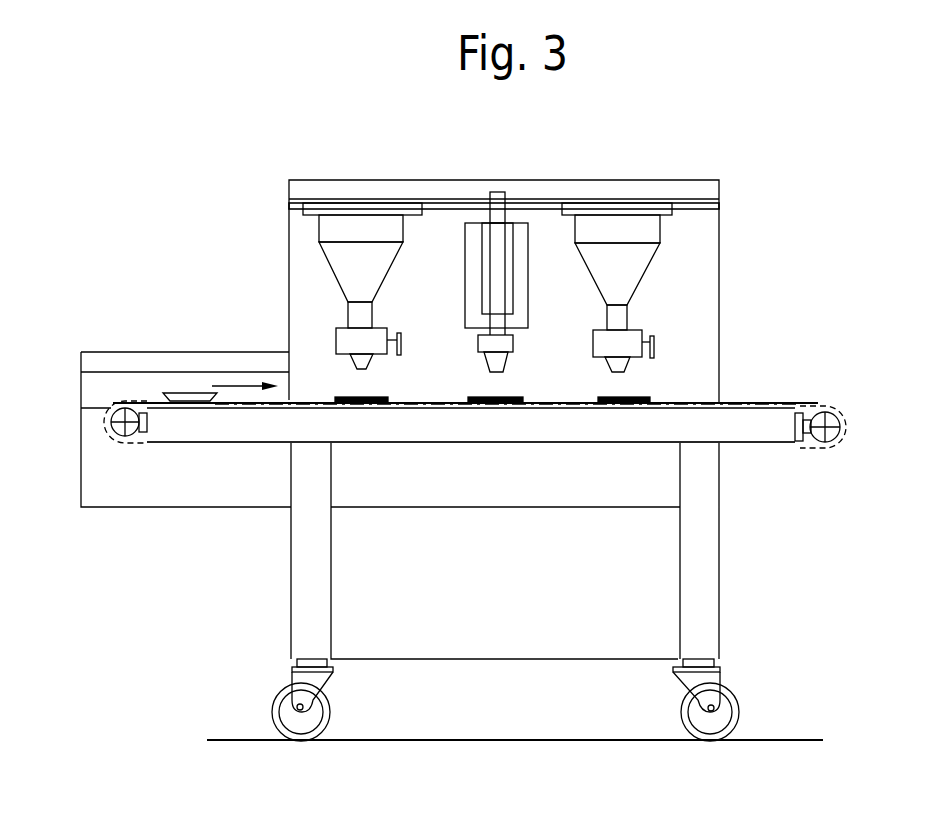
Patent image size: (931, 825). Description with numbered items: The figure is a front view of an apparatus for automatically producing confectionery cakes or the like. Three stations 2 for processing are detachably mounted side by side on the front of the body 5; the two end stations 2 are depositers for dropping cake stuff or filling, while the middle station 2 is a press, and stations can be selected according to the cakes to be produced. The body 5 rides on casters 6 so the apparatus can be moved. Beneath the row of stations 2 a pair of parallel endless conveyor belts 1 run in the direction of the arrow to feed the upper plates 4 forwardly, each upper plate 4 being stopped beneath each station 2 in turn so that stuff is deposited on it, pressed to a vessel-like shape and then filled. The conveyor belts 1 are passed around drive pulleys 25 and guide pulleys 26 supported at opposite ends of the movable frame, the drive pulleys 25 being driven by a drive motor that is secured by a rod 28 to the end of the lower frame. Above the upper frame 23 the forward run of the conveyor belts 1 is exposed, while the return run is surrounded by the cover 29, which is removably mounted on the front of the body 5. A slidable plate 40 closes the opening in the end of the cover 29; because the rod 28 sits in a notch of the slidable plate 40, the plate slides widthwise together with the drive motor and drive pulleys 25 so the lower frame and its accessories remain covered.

The endless conveyor belts 1 is at (137, 402).
The stations 2 is at (358, 216).
The upper plates 4 is at (186, 394).
The body 5 is at (440, 222).
The casters 6 is at (268, 720).
The upper frame 23 is at (695, 402).
The drive pulleys 25 is at (822, 412).
The guide pulleys 26 is at (106, 418).
The rod 28 is at (806, 437).
The cover 29 is at (448, 432).
The slidable plate 40 is at (797, 430).